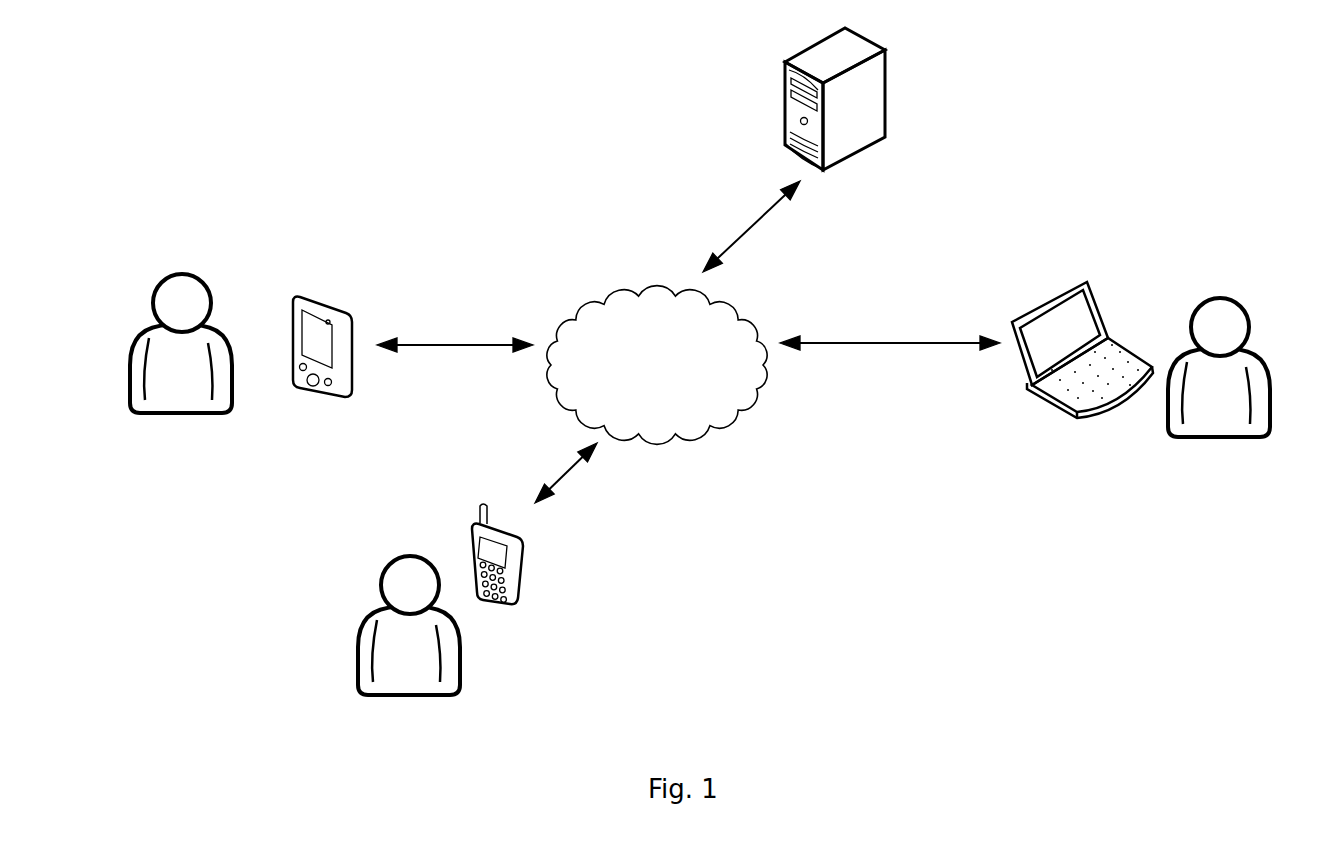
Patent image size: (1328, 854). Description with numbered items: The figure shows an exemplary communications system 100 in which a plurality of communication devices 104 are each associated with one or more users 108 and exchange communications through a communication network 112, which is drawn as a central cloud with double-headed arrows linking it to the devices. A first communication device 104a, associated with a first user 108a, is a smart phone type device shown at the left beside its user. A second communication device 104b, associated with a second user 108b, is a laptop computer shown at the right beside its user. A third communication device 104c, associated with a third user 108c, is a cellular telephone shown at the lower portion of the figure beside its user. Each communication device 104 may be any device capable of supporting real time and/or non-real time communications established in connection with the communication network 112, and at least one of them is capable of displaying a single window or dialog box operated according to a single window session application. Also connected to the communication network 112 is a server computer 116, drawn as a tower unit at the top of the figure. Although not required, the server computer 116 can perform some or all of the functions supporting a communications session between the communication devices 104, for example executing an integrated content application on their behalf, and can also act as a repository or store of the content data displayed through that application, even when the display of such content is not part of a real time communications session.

The communications system 100 is at (562, 88).
The communication device 104 is at (352, 317).
The first communication device 104a is at (318, 288).
The second communication device 104b is at (1047, 298).
The third communication device 104c is at (502, 608).
The user 108 is at (132, 344).
The first user 108a is at (148, 298).
The second user 108b is at (1255, 315).
The third user 108c is at (377, 687).
The communication network 112 is at (624, 300).
The server computer 116 is at (890, 88).